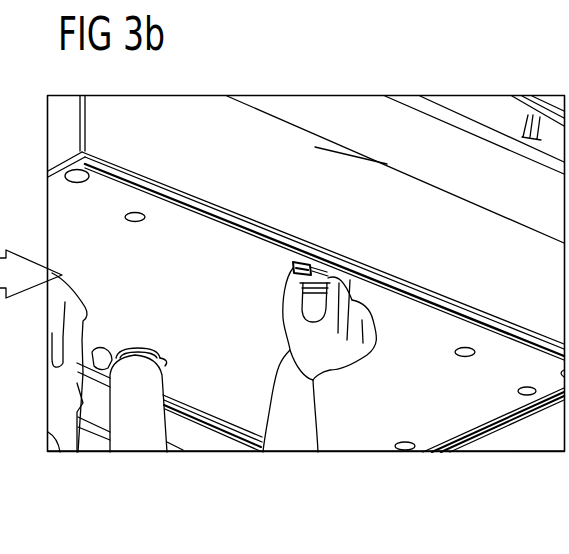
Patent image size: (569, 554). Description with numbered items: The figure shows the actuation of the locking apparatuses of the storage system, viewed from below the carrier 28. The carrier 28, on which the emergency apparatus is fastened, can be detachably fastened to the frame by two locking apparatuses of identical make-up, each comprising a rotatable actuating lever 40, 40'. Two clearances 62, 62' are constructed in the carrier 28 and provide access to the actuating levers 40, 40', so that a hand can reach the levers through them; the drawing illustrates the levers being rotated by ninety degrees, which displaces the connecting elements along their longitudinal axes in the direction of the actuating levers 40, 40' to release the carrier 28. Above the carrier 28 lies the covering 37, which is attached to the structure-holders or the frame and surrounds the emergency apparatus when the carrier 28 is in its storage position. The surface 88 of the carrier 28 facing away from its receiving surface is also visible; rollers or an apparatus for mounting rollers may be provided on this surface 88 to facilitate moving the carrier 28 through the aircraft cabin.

The covering 37 is at (442, 167).
The rotatable actuating lever 40 is at (344, 242).
The clearance 62 is at (271, 268).
The rotatable actuating lever 40' is at (169, 383).
The clearance 62' is at (107, 328).
The surface of the carrier 88 is at (377, 439).
The carrier 28 is at (492, 431).